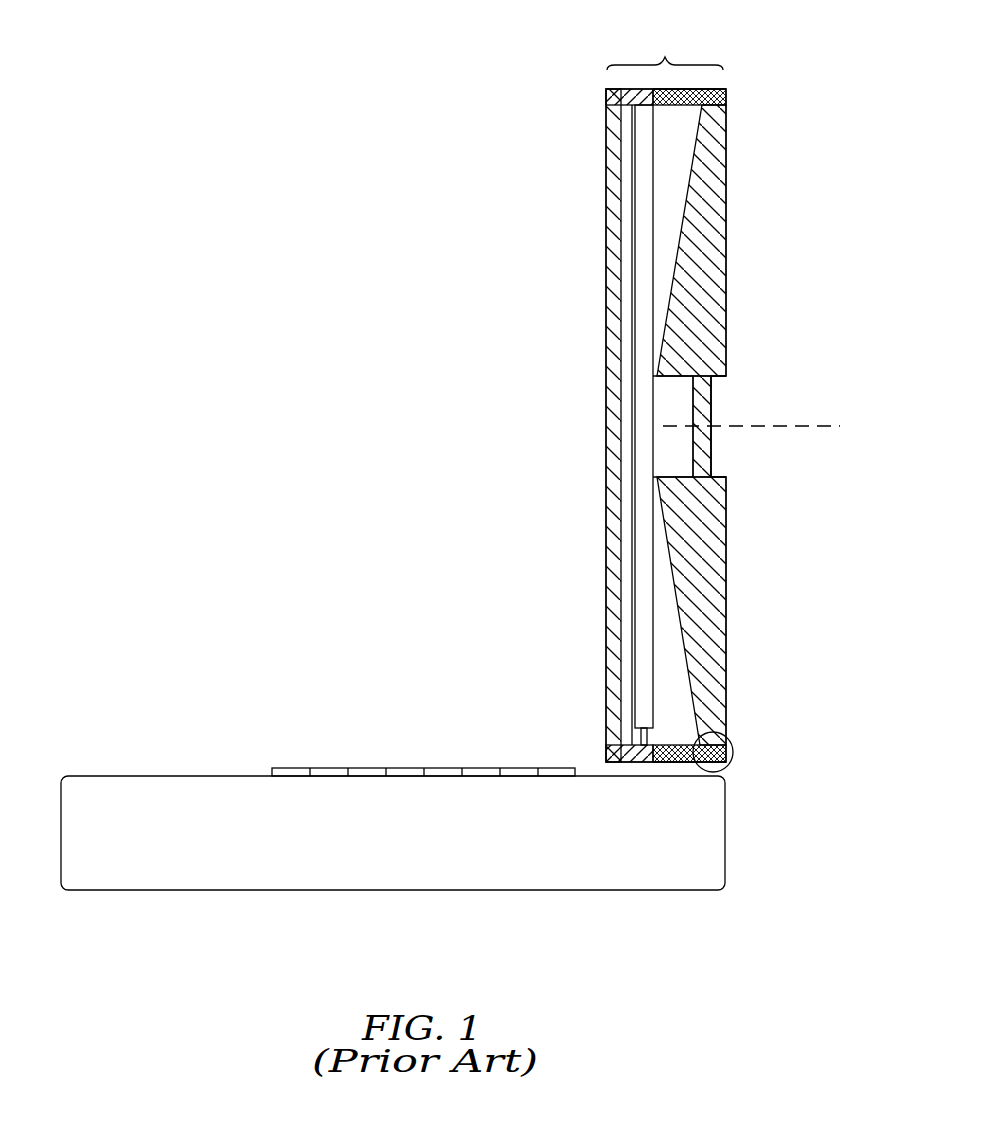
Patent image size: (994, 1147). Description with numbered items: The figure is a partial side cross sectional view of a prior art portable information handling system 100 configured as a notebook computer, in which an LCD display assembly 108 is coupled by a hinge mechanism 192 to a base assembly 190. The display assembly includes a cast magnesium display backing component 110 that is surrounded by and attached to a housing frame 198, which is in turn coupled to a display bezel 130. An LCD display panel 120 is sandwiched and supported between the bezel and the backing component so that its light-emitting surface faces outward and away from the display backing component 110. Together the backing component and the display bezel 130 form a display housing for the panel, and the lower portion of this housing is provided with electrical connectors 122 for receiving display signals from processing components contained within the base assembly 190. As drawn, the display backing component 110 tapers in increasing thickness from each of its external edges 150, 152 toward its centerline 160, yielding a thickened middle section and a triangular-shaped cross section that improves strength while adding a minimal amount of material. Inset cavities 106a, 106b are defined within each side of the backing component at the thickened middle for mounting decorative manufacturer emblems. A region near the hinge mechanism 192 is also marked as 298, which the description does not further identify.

The portable information handling system 100 is at (218, 108).
The LCD display assembly 108 is at (665, 48).
The display bezel 130 is at (606, 125).
The LCD display panel 120 is at (643, 187).
The electrical connectors 122 is at (637, 739).
The cast magnesium display backing component 110 is at (710, 295).
The inset cavity 106a is at (673, 403).
The inset cavity 106b is at (722, 402).
The centerline 160 is at (783, 425).
The external edge 150 is at (727, 88).
The housing frame 198 is at (703, 88).
The external edge 152 is at (723, 762).
The hinge mechanism 192 is at (733, 750).
The interface gap 298 is at (675, 762).
The base assembly 190 is at (98, 775).